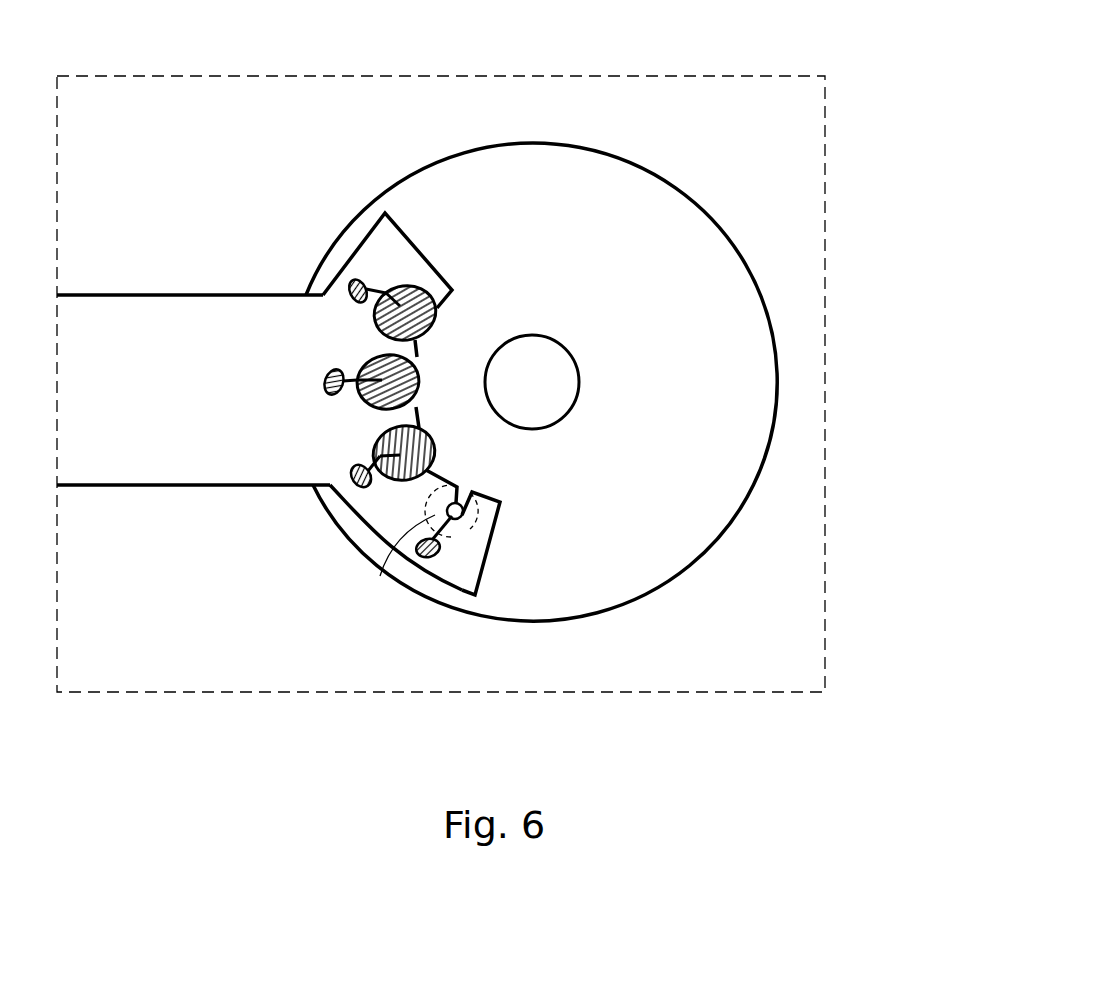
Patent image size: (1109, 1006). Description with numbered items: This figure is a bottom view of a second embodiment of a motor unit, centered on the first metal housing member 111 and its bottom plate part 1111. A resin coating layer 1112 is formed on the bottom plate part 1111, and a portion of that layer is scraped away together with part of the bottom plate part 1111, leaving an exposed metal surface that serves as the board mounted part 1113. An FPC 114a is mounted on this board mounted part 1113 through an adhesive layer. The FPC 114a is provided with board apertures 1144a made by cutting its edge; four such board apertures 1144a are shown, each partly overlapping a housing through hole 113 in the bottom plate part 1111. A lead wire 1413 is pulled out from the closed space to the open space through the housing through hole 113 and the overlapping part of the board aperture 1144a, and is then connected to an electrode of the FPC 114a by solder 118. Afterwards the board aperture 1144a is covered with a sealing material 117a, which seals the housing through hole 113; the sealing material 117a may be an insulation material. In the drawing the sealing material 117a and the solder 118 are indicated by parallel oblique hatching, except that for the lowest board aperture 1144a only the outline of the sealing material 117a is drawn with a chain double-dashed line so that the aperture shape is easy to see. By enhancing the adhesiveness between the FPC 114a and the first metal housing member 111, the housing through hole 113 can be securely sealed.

The first metal housing member 111 is at (621, 76).
The bottom plate part 1111 is at (766, 90).
The resin coating layer 1112 is at (773, 165).
The board mounted part 1113 is at (723, 270).
The housing through hole 113 is at (453, 281).
The sealing material 117a is at (422, 292).
The board aperture 1144a is at (440, 318).
The solder 118 is at (354, 286).
The lead wire 1413 is at (373, 292).
The FPC 114a is at (446, 598).